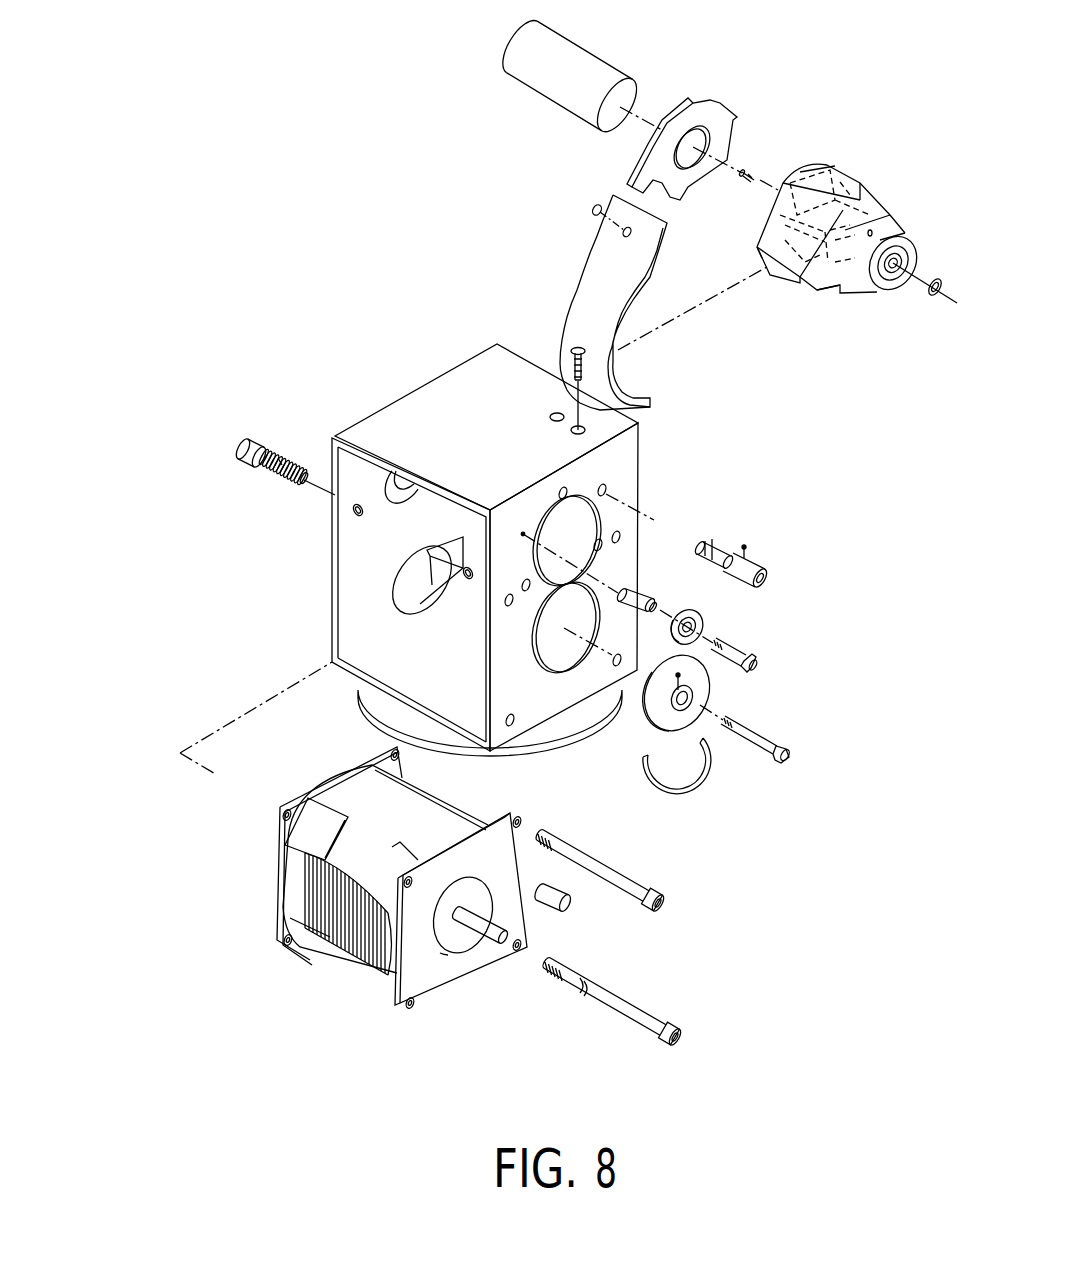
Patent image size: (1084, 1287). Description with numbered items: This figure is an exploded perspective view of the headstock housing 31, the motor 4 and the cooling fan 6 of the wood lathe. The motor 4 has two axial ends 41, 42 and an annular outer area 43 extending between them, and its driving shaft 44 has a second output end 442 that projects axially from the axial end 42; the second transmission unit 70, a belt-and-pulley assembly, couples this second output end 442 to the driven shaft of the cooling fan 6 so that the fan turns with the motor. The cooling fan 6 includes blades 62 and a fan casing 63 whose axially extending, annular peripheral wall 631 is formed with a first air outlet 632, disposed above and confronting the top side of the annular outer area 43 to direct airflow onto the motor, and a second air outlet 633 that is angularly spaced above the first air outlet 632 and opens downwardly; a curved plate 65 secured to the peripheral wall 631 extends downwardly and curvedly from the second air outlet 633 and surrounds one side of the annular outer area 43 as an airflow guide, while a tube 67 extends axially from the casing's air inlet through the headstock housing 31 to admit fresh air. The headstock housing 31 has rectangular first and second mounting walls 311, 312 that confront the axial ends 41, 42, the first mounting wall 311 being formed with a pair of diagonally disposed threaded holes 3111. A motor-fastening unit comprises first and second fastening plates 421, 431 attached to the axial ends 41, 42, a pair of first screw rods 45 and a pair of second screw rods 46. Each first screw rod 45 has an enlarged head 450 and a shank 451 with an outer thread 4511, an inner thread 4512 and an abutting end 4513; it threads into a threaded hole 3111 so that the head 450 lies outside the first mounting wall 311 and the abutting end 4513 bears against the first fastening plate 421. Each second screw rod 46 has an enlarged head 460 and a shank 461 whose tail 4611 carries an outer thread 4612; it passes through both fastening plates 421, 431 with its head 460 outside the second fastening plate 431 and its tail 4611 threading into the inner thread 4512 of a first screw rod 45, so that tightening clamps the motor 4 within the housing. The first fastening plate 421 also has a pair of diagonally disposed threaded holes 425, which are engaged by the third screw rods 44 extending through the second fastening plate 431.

The motor 4 is at (371, 912).
The cooling fan 6 is at (785, 211).
The headstock housing 31 is at (508, 518).
The axial end 41 is at (290, 886).
The axial end 42 is at (461, 954).
The annular outer area 43 is at (343, 927).
The driving shaft 44 is at (610, 872).
The first screw rod 45 is at (259, 436).
The second screw rod 46 is at (664, 1013).
The blades 62 is at (792, 175).
The fan casing 63 is at (790, 280).
The curved plate 65 is at (563, 312).
The tube 67 is at (520, 53).
The second transmission unit 70 is at (705, 788).
The first mounting wall 311 is at (362, 535).
The second mounting wall 312 is at (627, 472).
The first fastening plate 421 is at (339, 856).
The threaded holes 425 is at (390, 752).
The second fastening plate 431 is at (473, 973).
The second output end 442 is at (500, 947).
The enlarged head 450 is at (232, 448).
The shank 451 is at (267, 468).
The enlarged head 460 is at (680, 1033).
The shank 461 is at (637, 1013).
The peripheral wall 631 is at (840, 165).
The first air outlet 632 is at (830, 293).
The second air outlet 633 is at (760, 255).
The threaded holes 3111 is at (465, 580).
The outer thread 4511 is at (280, 455).
The inner thread 4512 is at (317, 470).
The abutting end 4513 is at (299, 487).
The tail 4611 is at (568, 968).
The outer thread 4612 is at (560, 966).